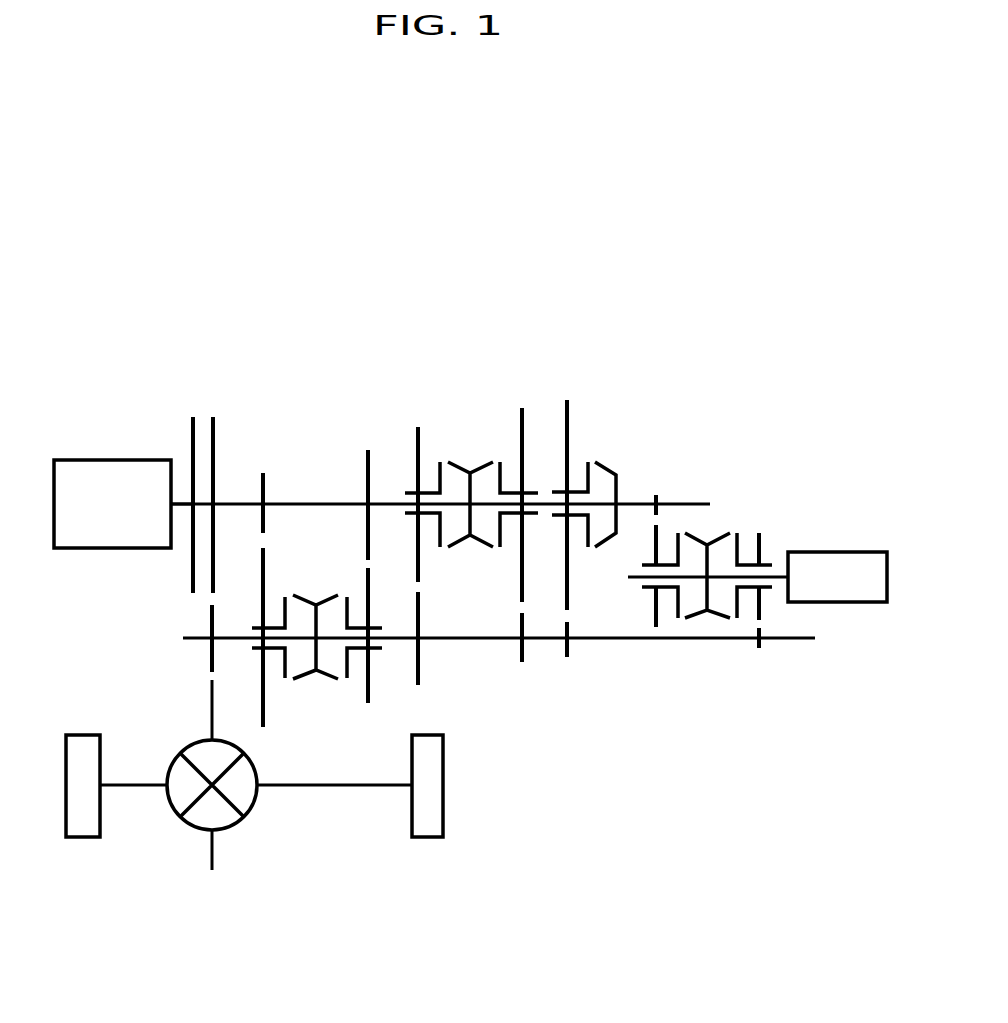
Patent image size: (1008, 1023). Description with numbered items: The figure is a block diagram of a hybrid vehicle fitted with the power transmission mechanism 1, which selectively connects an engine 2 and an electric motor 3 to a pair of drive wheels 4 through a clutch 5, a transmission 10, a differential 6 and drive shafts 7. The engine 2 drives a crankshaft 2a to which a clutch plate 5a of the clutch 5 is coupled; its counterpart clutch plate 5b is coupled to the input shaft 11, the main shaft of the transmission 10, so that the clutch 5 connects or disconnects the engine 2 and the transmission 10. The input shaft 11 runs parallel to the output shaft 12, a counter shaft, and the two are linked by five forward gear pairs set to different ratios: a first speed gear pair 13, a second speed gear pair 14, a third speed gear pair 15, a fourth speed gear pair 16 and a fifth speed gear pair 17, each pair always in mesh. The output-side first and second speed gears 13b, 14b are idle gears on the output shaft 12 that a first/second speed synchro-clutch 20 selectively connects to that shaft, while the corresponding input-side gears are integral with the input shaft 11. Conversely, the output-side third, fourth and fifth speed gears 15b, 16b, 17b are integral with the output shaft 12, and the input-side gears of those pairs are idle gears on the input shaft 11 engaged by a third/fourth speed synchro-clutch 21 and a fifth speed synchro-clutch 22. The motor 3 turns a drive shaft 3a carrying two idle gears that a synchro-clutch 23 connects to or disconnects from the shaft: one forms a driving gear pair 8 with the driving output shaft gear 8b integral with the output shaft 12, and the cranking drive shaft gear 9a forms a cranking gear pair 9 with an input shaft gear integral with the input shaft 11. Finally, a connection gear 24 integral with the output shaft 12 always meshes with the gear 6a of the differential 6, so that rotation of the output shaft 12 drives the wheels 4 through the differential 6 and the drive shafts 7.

The power transmission mechanism 1 is at (577, 248).
The engine 2 is at (95, 458).
The crankshaft 2a is at (185, 507).
The motor 3 is at (842, 551).
The drive shaft 3a is at (775, 575).
The drive wheels 4 is at (80, 838).
The clutch 5 is at (203, 452).
The clutch plate 5a is at (193, 416).
The clutch plate 5b is at (226, 474).
The differential 6 is at (230, 828).
The gear 6a is at (210, 705).
The drive shafts 7 is at (140, 790).
The driving gear pair 8 is at (790, 580).
The driving output shaft gear 8b is at (758, 650).
The cranking gear pair 9 is at (677, 556).
The cranking drive shaft gear 9a is at (656, 628).
The transmission 10 is at (615, 762).
The input shaft 11 is at (697, 502).
The output shaft 12 is at (793, 641).
The first speed gear pair 13 is at (286, 565).
The output-side forward first speed gear 13b is at (265, 577).
The second speed gear pair 14 is at (350, 545).
The output-side forward second speed gear 14b is at (368, 704).
The third speed gear pair 15 is at (446, 541).
The output-side forward third speed gear 15b is at (418, 665).
The fourth speed gear pair 16 is at (526, 518).
The output-side forward fourth speed gear 16b is at (522, 662).
The fifth speed gear pair 17 is at (612, 525).
The output-side forward fifth speed gear 17b is at (567, 657).
The first/second speed synchro-clutch 20 is at (307, 677).
The third/fourth speed synchro-clutch 21 is at (478, 548).
The fifth speed synchro-clutch 22 is at (608, 540).
The synchro-clutch 23 is at (717, 619).
The connection gear 24 is at (210, 654).